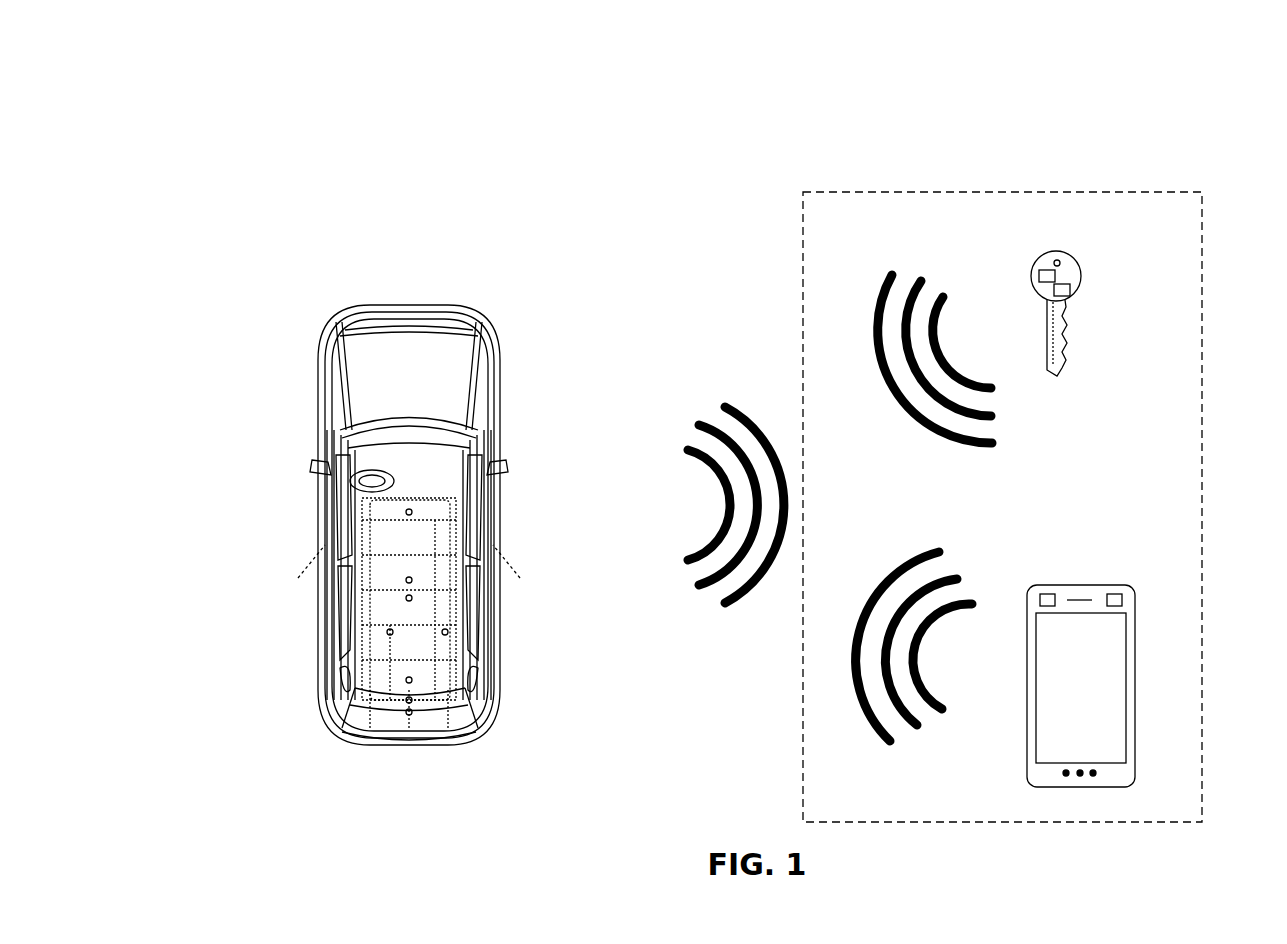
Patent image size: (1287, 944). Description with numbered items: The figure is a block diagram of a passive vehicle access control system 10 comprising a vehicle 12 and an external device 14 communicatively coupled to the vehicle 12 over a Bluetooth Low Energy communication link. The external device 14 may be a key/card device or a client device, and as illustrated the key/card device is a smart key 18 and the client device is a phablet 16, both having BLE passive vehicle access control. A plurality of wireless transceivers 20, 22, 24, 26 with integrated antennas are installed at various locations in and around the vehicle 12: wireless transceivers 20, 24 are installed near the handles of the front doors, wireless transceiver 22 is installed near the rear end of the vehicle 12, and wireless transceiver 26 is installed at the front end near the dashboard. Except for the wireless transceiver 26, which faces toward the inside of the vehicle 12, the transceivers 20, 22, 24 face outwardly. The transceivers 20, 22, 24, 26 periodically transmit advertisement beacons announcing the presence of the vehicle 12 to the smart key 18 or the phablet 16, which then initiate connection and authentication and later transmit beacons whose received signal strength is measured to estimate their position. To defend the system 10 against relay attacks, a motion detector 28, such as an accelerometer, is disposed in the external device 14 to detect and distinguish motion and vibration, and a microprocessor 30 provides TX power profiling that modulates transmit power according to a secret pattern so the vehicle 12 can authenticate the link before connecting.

The system 10 is at (1044, 430).
The vehicle 12 is at (422, 510).
The external device 14 is at (938, 192).
The phablet 16 is at (1165, 625).
The smart key 18 is at (1112, 289).
The wireless transceiver 20 is at (310, 537).
The wireless transceiver 22 is at (450, 703).
The wireless transceiver 24 is at (525, 496).
The wireless transceiver 26 is at (421, 456).
The motion detector 28 is at (1066, 284).
The microprocessor 30 is at (1046, 270).